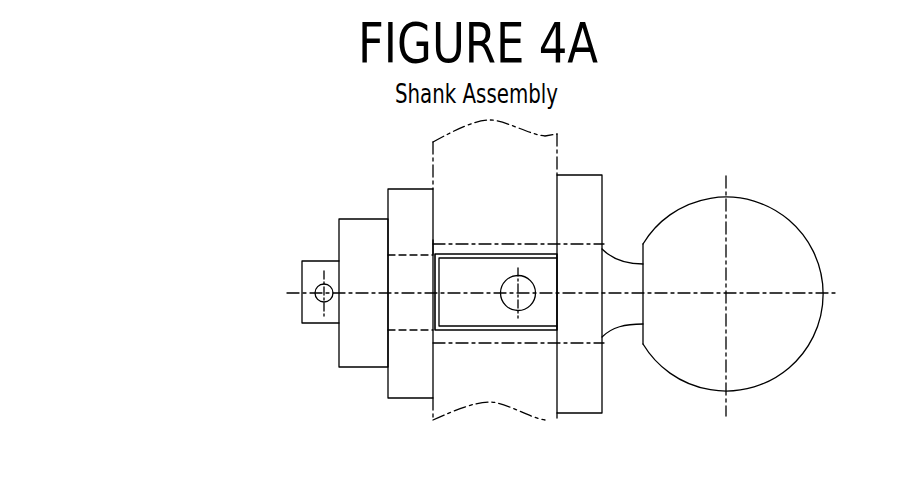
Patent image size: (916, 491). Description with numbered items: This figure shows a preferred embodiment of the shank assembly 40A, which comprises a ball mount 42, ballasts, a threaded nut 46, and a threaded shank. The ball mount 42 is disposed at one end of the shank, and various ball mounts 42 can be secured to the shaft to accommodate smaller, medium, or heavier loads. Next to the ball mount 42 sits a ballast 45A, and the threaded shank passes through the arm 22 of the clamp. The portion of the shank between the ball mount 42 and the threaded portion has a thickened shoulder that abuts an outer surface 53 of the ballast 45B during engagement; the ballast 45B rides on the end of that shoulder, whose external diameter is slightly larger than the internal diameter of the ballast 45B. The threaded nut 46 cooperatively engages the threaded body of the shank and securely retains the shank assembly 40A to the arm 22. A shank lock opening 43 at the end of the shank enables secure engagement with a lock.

The shank assembly 40A is at (412, 141).
The arm 22 is at (545, 402).
The outer surface 53 is at (433, 237).
The ballast 45B is at (407, 385).
The threaded nut 46 is at (353, 232).
The shank lock opening 43 is at (324, 304).
The ballast 45A is at (577, 185).
The ball mount 42 is at (753, 215).